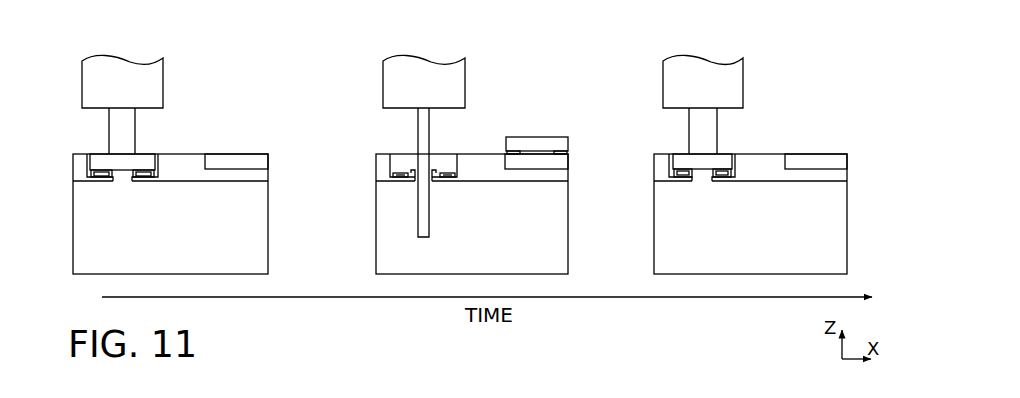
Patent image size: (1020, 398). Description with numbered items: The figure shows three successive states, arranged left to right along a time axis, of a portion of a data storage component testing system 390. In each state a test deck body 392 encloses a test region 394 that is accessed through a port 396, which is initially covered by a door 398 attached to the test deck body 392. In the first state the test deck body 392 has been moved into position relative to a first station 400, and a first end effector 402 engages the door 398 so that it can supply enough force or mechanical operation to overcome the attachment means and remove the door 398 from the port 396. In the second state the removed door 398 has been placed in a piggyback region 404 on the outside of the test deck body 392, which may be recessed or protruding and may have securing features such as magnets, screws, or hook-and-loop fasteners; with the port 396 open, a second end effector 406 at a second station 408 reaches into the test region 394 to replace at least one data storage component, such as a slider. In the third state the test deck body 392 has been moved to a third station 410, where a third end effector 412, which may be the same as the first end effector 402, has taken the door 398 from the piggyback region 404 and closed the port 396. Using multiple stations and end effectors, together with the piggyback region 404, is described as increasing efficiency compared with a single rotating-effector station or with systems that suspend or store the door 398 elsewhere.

The data storage component testing system 390 is at (128, 40).
The test deck body 392 is at (269, 189).
The test region 394 is at (259, 267).
The port 396 is at (122, 182).
The door 398 is at (150, 154).
The first station 400 is at (141, 94).
The first end effector 402 is at (110, 143).
The piggyback region 404 is at (252, 153).
The second end effector 406 is at (417, 143).
The second station 408 is at (442, 94).
The third station 410 is at (720, 94).
The third end effector 412 is at (689, 145).